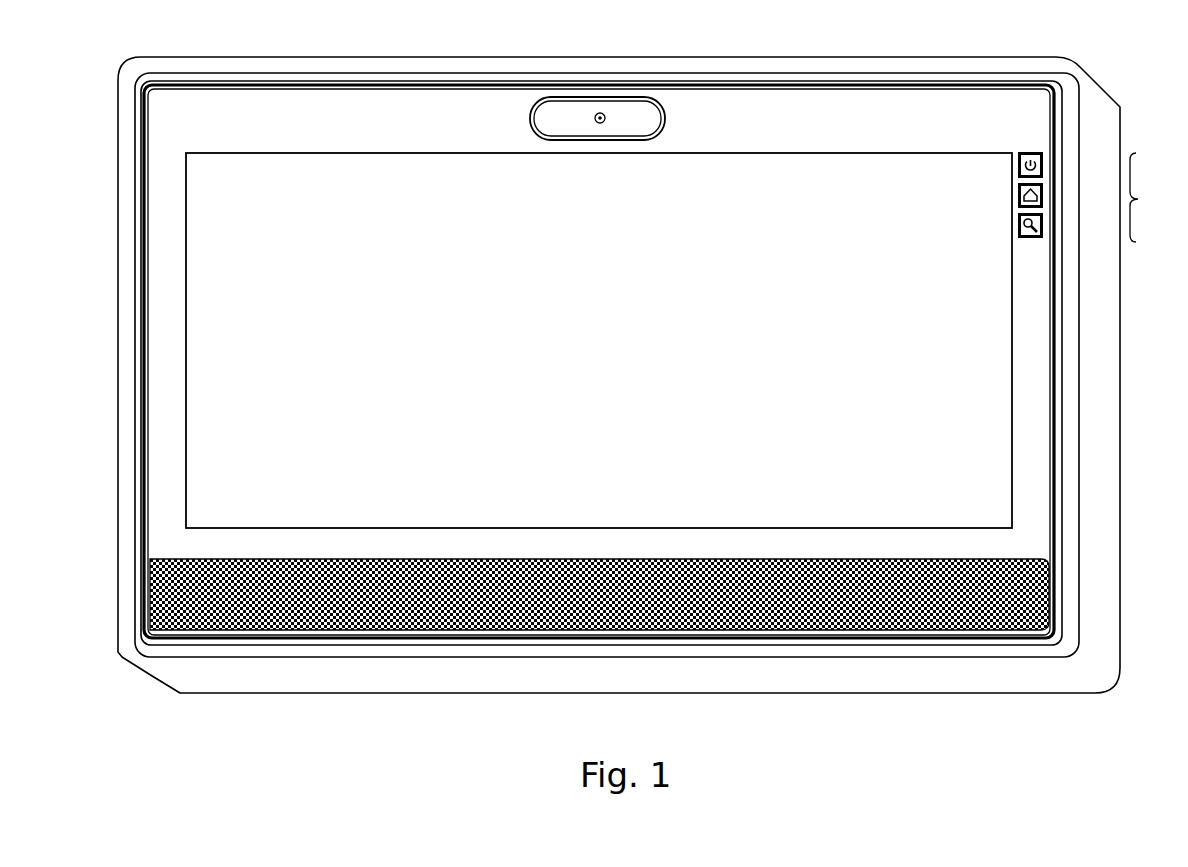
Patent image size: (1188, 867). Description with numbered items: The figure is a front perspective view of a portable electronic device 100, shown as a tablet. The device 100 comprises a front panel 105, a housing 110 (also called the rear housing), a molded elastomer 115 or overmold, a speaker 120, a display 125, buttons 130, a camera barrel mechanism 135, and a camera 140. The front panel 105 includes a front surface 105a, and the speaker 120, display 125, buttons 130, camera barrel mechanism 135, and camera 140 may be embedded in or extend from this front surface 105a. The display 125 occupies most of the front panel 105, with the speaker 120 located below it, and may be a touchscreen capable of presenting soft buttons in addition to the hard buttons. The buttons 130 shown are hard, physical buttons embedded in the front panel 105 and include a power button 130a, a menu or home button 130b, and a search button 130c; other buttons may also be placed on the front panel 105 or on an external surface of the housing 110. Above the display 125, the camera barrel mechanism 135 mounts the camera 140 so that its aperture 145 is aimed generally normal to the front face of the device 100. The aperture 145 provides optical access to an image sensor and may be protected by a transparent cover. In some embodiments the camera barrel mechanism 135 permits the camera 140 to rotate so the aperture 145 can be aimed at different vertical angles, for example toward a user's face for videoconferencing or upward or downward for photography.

The portable electronic device 100 is at (1060, 733).
The front panel 105 is at (148, 243).
The front surface 105a is at (994, 114).
The housing 110 is at (118, 525).
The molded elastomer 115 is at (130, 657).
The speaker 120 is at (599, 594).
The display 125 is at (599, 340).
The buttons 130 is at (1156, 197).
The power button 130a is at (1018, 156).
The home button 130b is at (1043, 196).
The search button 130c is at (1018, 232).
The camera barrel mechanism 135 is at (520, 112).
The camera 140 is at (648, 114).
The aperture 145 is at (600, 112).